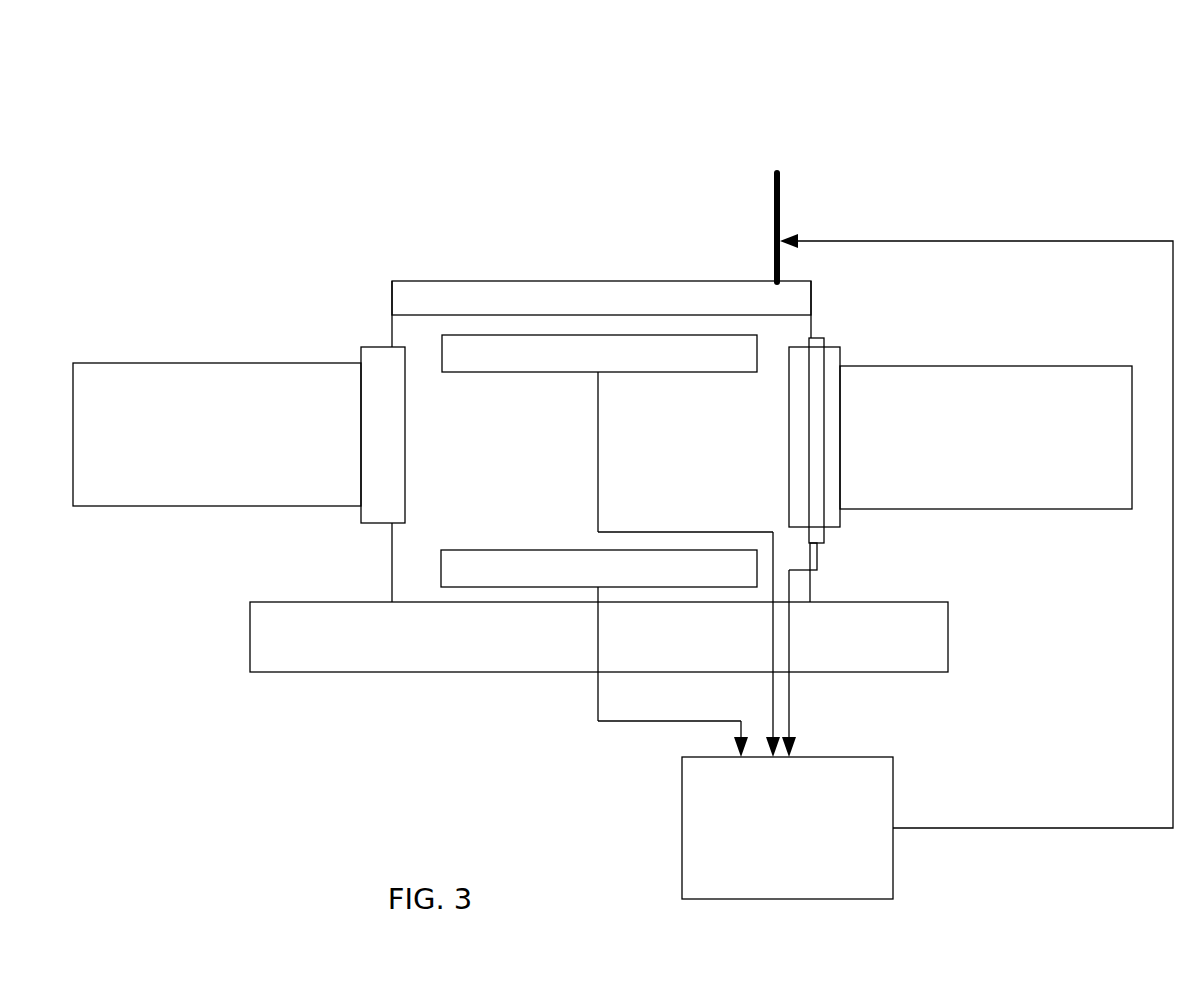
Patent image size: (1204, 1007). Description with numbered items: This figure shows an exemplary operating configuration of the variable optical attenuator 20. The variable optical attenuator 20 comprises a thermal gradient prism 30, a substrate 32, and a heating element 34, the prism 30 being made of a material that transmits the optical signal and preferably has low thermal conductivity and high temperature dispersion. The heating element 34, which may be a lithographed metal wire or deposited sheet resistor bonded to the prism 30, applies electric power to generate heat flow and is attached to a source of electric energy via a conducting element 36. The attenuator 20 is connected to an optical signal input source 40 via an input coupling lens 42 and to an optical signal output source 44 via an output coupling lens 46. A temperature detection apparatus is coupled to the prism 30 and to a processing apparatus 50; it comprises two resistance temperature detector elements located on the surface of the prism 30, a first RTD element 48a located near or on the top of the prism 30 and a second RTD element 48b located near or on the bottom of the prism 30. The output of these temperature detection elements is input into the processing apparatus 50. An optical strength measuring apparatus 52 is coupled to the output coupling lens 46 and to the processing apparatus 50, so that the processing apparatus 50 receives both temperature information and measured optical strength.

The variable optical attenuator 20 is at (925, 81).
The thermal gradient prism 30 is at (391, 327).
The substrate 32 is at (452, 673).
The heating element 34 is at (640, 281).
The conducting element 36 is at (782, 227).
The optical signal input source 40 is at (210, 507).
The input coupling lens 42 is at (361, 352).
The optical signal output source 44 is at (1034, 509).
The output coupling lens 46 is at (842, 364).
The first RTD element 48a is at (526, 579).
The second RTD element 48b is at (507, 343).
The processing apparatus 50 is at (893, 868).
The optical strength measuring apparatus 52 is at (822, 545).